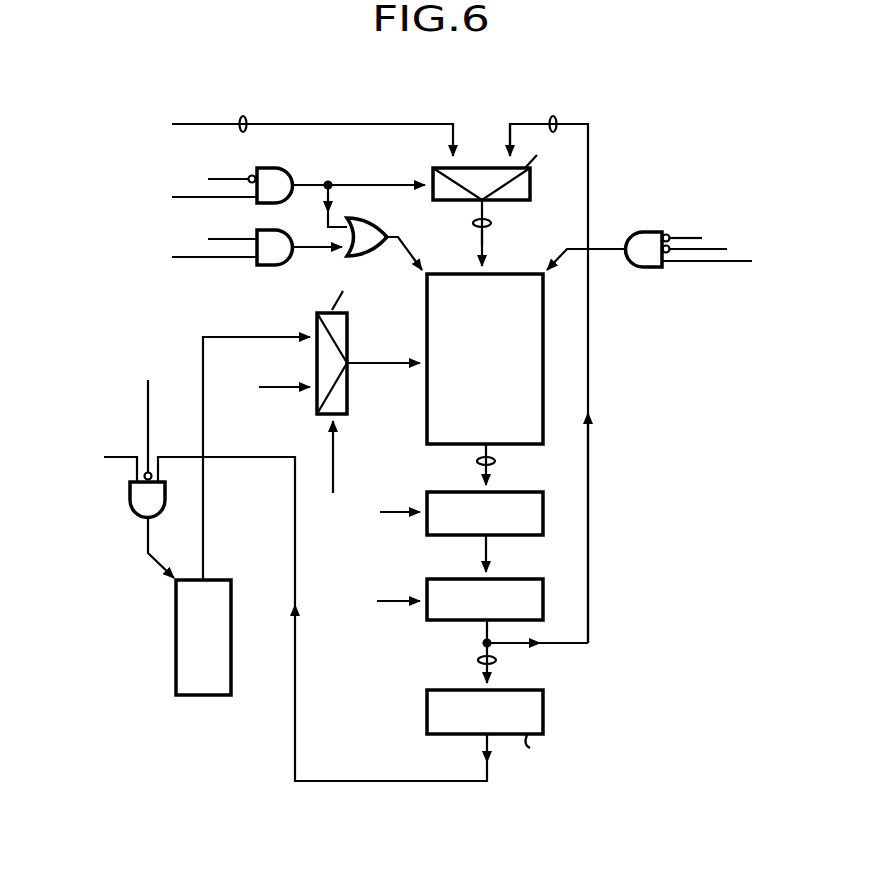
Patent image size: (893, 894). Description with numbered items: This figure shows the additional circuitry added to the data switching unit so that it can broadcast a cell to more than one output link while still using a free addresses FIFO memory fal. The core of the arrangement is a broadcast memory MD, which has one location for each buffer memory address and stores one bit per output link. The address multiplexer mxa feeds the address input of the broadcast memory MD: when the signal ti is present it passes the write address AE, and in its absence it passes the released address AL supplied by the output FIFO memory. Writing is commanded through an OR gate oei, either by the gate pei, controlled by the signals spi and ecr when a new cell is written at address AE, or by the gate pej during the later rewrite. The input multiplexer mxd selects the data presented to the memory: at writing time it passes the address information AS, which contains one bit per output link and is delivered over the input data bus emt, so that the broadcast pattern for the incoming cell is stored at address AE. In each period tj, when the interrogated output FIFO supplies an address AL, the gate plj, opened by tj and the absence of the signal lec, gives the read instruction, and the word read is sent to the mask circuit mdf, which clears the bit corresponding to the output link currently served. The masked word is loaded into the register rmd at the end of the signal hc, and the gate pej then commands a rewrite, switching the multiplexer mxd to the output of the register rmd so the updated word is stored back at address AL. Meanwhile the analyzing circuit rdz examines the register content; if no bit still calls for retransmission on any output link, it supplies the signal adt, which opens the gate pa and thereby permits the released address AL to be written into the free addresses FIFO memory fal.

The address information bits AS is at (222, 99).
The read control signal lec is at (190, 177).
The rewrite control gate pej is at (281, 190).
The write control signal spi is at (232, 214).
The write signal ecr is at (190, 238).
The write control gate pei is at (272, 252).
The OR gate oei is at (384, 204).
The input multiplexer mxd is at (470, 178).
The input data bus emt is at (482, 248).
The read control gate plj is at (648, 254).
The period signal tj is at (716, 261).
The released address AL is at (275, 314).
The write address AE is at (279, 363).
The address multiplexer mxa is at (342, 341).
The broadcast memory MD is at (441, 405).
The write interval signal ti is at (333, 487).
The FIFO write gate pa is at (143, 505).
The free addresses FIFO memory fal is at (198, 653).
The mask circuit mdf is at (510, 505).
The register rmd is at (505, 590).
The clock signal hc is at (391, 580).
The analyzing circuit rdz is at (510, 705).
The release enable signal adt is at (398, 781).